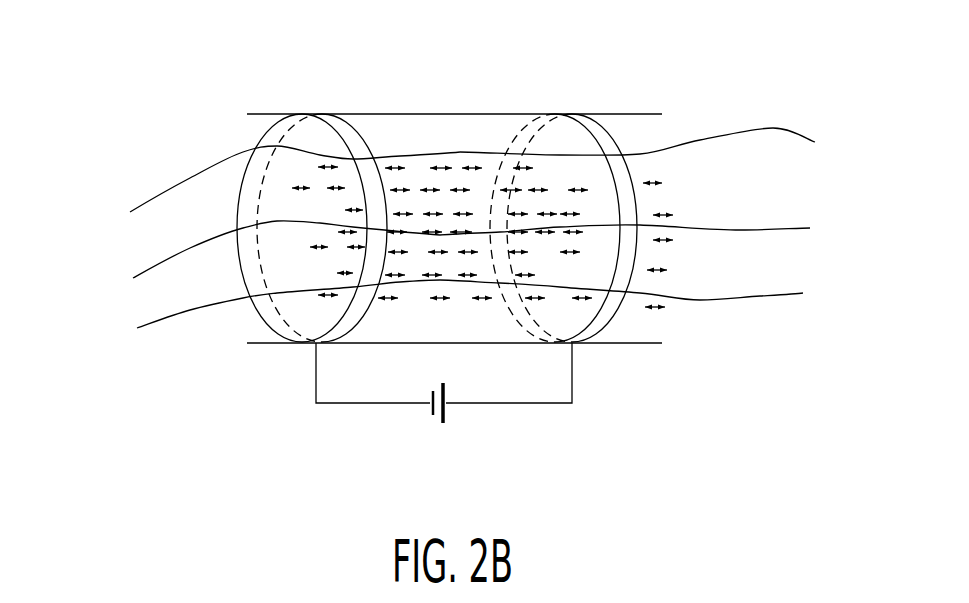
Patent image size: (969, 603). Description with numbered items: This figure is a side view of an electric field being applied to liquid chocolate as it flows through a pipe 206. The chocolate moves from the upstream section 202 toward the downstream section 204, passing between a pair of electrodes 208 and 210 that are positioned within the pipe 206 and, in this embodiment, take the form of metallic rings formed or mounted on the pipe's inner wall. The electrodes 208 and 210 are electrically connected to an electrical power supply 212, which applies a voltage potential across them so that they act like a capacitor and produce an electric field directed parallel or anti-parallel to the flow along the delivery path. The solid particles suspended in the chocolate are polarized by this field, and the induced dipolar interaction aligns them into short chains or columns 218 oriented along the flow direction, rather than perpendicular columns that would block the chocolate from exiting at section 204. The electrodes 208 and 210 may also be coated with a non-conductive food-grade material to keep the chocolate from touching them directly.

The section 202 is at (124, 203).
The section 204 is at (809, 130).
The pipe 206 is at (362, 110).
The electrode 208 is at (302, 346).
The electrode 210 is at (586, 346).
The electrical power supply 212 is at (435, 427).
The vertical columns 218 is at (406, 183).